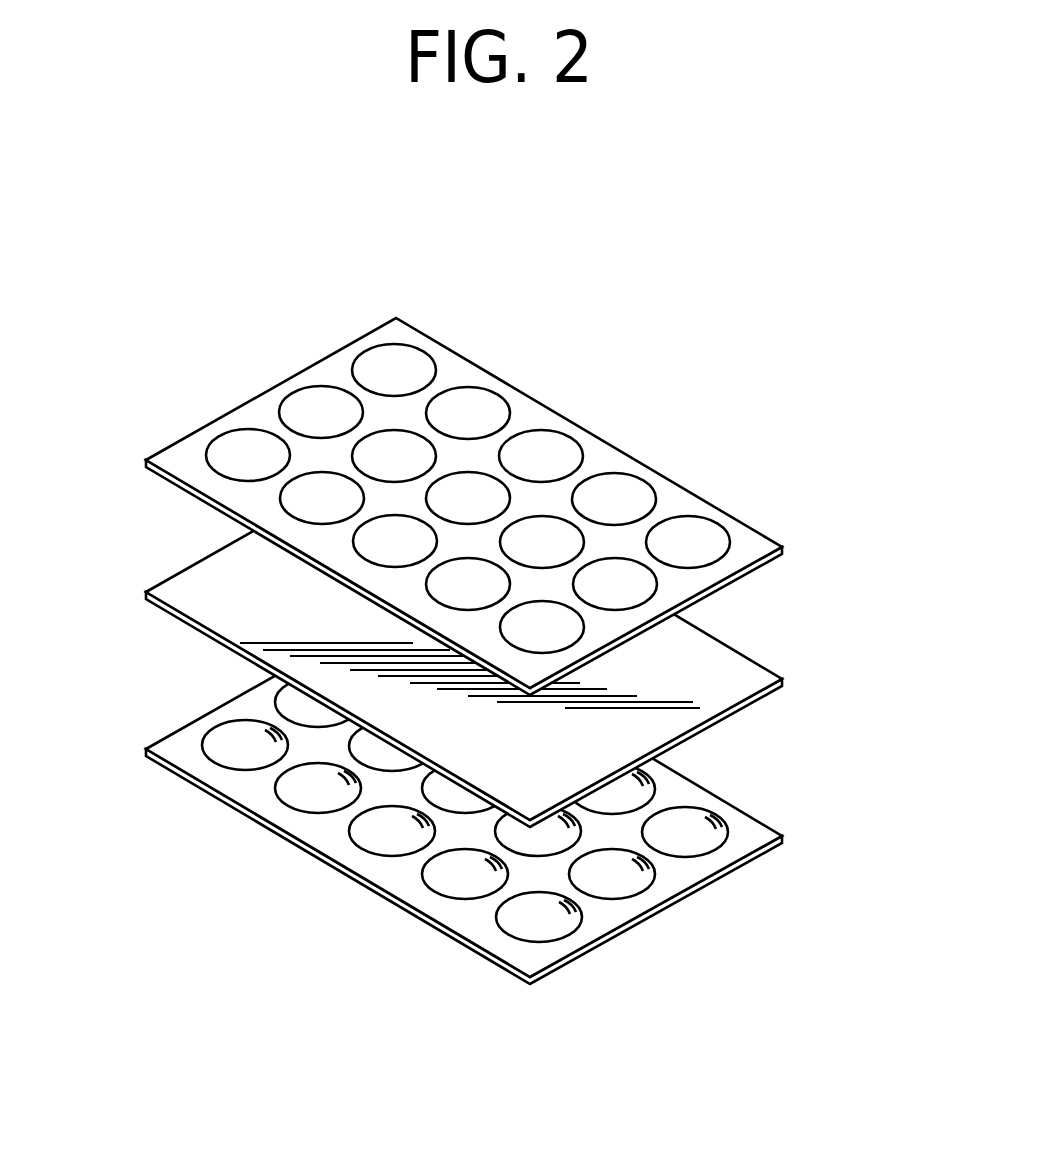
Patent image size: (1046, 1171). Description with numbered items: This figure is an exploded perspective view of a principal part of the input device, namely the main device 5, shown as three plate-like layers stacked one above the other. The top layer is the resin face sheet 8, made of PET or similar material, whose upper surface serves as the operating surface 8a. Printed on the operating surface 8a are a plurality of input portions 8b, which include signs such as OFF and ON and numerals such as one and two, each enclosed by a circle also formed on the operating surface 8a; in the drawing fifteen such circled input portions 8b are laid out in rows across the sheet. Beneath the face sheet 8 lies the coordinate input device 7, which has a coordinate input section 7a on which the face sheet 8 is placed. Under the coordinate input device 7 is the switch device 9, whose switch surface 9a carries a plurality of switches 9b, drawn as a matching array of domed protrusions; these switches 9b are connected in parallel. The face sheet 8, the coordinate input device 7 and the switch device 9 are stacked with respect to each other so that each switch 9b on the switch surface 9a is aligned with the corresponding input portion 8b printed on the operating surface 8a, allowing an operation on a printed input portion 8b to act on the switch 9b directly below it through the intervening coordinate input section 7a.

The main device 5 is at (613, 385).
The coordinate input device 7 is at (456, 638).
The coordinate input section 7a is at (207, 578).
The face sheet 8 is at (516, 463).
The operating surface 8a is at (675, 498).
The input portions 8b is at (372, 343).
The switch device 9 is at (489, 802).
The switch surface 9a is at (402, 868).
The switches 9b is at (373, 840).